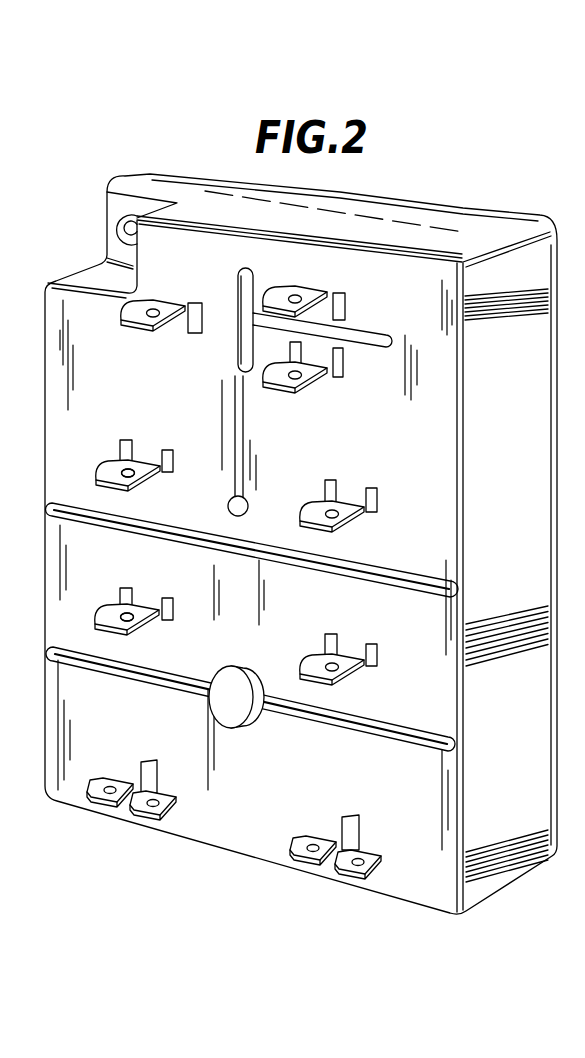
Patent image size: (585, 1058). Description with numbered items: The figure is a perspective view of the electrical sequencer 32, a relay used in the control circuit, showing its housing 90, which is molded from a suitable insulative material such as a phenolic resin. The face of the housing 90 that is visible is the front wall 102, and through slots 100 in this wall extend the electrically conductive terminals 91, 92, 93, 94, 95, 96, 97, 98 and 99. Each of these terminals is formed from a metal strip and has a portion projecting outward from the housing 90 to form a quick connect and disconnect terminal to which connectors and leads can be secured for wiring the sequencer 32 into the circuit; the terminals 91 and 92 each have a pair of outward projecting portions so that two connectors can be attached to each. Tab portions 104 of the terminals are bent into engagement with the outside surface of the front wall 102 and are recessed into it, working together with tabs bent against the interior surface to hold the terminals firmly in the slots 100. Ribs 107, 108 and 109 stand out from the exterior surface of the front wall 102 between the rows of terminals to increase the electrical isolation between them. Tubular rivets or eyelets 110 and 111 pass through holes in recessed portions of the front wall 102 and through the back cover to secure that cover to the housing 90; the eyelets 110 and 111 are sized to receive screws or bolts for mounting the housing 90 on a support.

The sequencer 32 is at (127, 182).
The housing 90 is at (412, 226).
The terminal 91 is at (98, 807).
The terminal 92 is at (337, 873).
The terminal 93 is at (102, 627).
The terminal 94 is at (313, 670).
The terminal 95 is at (112, 477).
The terminal 96 is at (318, 520).
The terminal 97 is at (165, 305).
The terminal 98 is at (308, 386).
The terminal 99 is at (303, 292).
The slots 100 is at (135, 468).
The front wall 102 is at (433, 368).
The tab portions 104 is at (195, 330).
The rib 107 is at (403, 733).
The rib 108 is at (407, 582).
The rib 109 is at (368, 340).
The tubular rivet or eyelet 110 is at (118, 229).
The tubular rivet or eyelet 111 is at (250, 730).